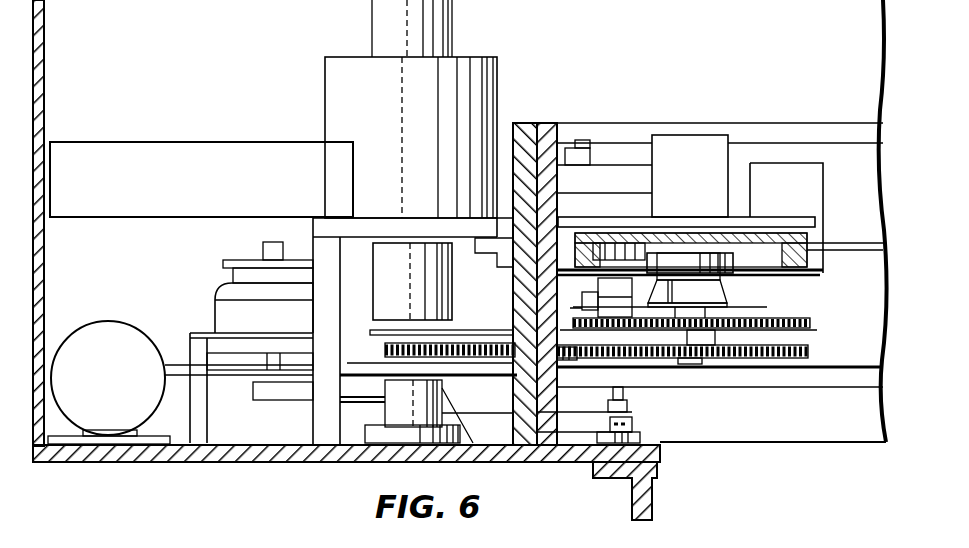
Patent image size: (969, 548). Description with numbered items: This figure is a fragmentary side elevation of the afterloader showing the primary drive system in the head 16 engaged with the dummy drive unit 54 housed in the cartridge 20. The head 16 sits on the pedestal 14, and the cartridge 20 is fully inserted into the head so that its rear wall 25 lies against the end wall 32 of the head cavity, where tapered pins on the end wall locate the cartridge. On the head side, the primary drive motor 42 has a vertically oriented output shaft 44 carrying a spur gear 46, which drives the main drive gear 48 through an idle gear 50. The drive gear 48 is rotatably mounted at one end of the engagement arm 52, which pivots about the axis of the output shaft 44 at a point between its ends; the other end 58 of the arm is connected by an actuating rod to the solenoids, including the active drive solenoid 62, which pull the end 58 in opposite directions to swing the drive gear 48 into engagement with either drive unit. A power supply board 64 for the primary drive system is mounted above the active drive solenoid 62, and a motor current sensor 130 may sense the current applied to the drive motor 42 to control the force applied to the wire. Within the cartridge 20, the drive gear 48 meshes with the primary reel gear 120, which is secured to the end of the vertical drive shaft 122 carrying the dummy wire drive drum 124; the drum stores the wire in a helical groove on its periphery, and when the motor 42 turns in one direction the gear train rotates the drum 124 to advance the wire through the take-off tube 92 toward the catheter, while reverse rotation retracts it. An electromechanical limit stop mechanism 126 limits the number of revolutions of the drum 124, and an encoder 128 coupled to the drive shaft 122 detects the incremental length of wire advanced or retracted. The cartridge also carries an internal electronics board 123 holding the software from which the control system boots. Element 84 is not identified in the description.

The pedestal 14 is at (642, 493).
The head 16 is at (256, 456).
The cartridge 20 is at (767, 377).
The rear wall 25 is at (553, 125).
The end wall 32 is at (520, 125).
The primary drive motor 42 is at (338, 78).
The output shaft 44 is at (408, 243).
The spur gear 46 is at (403, 345).
The main drive gear 48 is at (562, 355).
The idle gear 50 is at (470, 345).
The engagement arm 52 is at (230, 368).
The dummy drive unit 54 is at (765, 106).
The other end of engagement arm 58 is at (176, 362).
The active drive solenoid 62 is at (88, 345).
The power supply board 64 is at (92, 152).
The pump 84 is at (222, 287).
The take-off tube 92 is at (855, 250).
The primary reel gear 120 is at (810, 347).
The drive shaft 122 is at (694, 368).
The internal electronics board 123 is at (823, 143).
The dummy wire drive drum 124 is at (807, 232).
The electromechanical limit stop mechanism 126 is at (667, 113).
The encoder 128 is at (775, 294).
The motor current sensor 130 is at (385, 14).